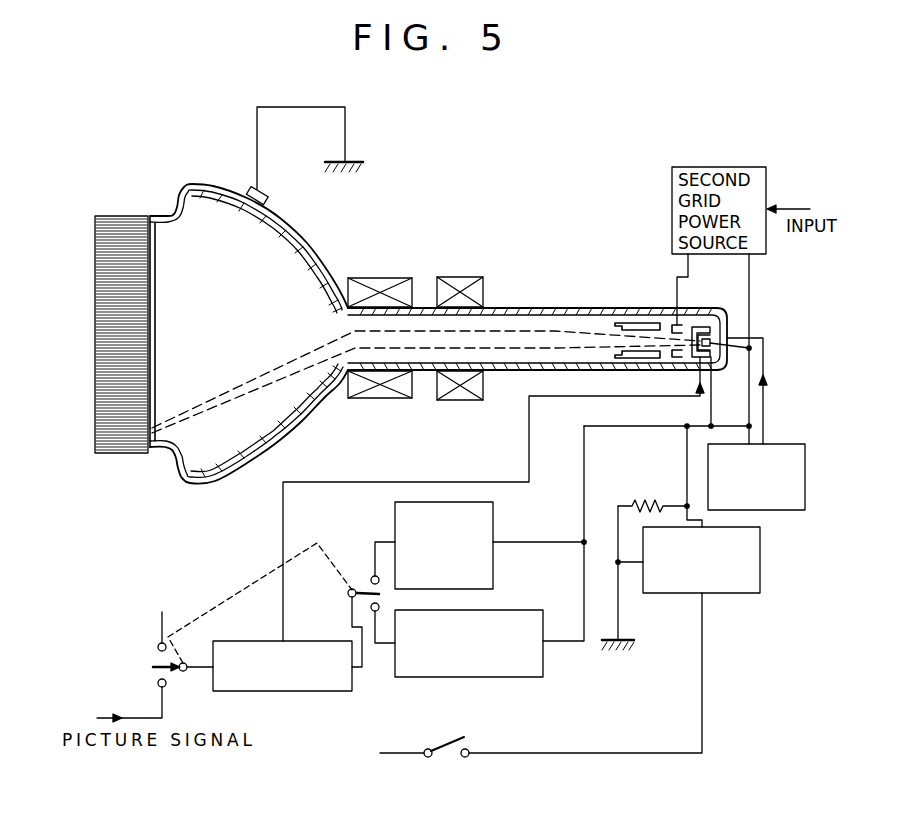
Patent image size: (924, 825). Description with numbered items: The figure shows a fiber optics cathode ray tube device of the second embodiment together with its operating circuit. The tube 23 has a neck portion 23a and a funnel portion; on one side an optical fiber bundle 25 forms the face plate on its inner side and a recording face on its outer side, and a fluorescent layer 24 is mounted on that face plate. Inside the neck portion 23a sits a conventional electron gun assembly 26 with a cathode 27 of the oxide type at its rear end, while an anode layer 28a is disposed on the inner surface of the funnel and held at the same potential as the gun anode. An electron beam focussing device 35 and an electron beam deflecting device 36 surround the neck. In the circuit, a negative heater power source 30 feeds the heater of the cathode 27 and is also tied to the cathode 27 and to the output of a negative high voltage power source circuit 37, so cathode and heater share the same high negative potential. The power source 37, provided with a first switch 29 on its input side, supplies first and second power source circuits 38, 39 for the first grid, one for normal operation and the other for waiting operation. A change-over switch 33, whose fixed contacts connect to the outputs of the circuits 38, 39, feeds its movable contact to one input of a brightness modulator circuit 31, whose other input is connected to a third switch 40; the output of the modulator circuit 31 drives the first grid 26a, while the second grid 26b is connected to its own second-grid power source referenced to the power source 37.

The tube 23 is at (311, 250).
The neck portion 23a is at (556, 307).
The fluorescent layer 24 is at (156, 293).
The optical fiber bundle 25 is at (118, 216).
The electron gun assembly 26 is at (661, 324).
The first grid 26a is at (712, 343).
The second grid 26b is at (678, 356).
The cathode 27 is at (713, 321).
The anode layer 28a is at (307, 432).
The first switch 29 is at (447, 759).
The negative heater power source 30 is at (805, 480).
The brightness modulator circuit 31 is at (303, 692).
The change-over switch 33 is at (359, 583).
The electron beam focussing device 35 is at (459, 277).
The electron beam deflecting device 36 is at (379, 277).
The negative high voltage power source circuit 37 is at (741, 594).
The first power source circuit for first grid 38 is at (494, 518).
The second power source circuit for first grid 39 is at (484, 678).
The third switch 40 is at (160, 658).